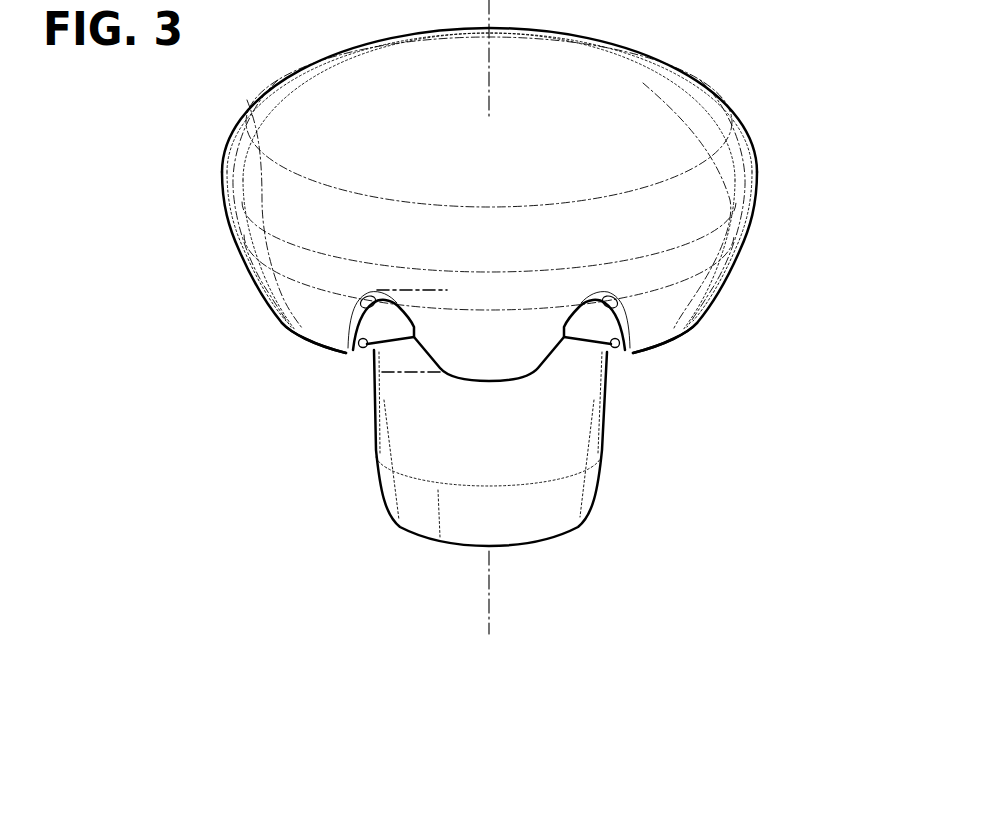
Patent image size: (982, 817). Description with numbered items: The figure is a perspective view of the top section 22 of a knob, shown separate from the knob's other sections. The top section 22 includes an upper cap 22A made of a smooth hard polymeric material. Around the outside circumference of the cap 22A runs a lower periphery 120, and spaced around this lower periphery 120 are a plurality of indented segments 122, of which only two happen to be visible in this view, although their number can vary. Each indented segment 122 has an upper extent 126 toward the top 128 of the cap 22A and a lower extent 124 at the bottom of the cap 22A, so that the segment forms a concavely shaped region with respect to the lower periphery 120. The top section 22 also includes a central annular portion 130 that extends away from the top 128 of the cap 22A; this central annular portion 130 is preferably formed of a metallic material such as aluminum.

The top section 22 is at (511, 287).
The upper cap 22A is at (743, 160).
The lower periphery 120 is at (290, 326).
The indented segments 122 is at (375, 293).
The lower extent 124 is at (393, 374).
The upper extent 126 is at (407, 290).
The top 128 is at (505, 164).
The central annular portion 130 is at (563, 425).